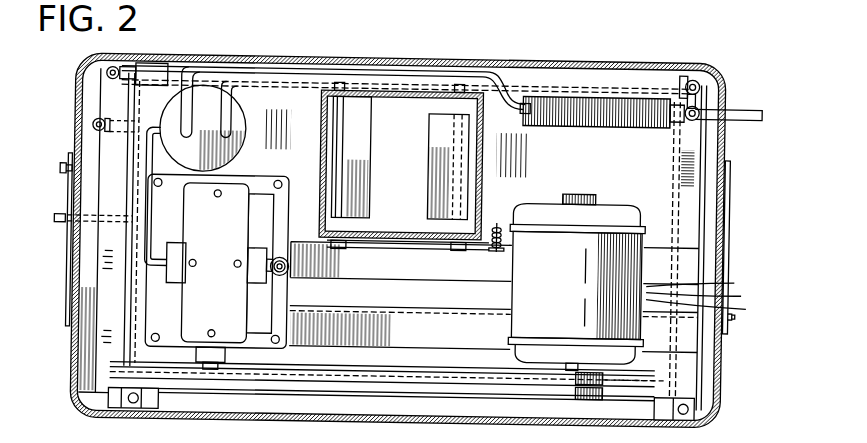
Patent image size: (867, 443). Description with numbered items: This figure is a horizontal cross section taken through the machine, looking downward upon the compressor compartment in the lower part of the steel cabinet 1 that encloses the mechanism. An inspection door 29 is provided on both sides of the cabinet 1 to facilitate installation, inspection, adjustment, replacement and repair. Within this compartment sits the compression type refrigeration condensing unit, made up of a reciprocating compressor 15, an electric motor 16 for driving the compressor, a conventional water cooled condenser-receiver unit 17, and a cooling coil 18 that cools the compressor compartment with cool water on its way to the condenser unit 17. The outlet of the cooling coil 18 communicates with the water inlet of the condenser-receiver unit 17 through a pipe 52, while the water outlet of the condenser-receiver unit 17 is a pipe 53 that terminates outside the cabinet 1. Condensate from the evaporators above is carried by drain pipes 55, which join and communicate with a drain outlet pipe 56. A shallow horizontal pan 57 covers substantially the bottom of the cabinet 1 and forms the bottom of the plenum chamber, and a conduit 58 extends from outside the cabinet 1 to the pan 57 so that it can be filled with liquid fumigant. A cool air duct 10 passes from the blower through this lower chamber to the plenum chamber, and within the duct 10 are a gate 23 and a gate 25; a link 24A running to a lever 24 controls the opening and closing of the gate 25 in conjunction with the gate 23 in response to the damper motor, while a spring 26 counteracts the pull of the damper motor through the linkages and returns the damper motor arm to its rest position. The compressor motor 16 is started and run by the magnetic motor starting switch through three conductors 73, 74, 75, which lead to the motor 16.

The steel cabinet 1 is at (506, 56).
The cool air duct 10 is at (484, 181).
The reciprocating compressor 15 is at (220, 229).
The electric motor 16 is at (577, 282).
The water cooled condenser-receiver unit 17 is at (233, 148).
The cooling coil 18 is at (562, 118).
The gate 23 is at (430, 173).
The lever 24 is at (494, 297).
The link 24A is at (407, 259).
The gate 25 is at (368, 124).
The spring 26 is at (497, 243).
The inspection door 29 is at (76, 278).
The pipe 52 is at (233, 106).
The pipe 53 is at (193, 66).
The drain pipes 55 is at (108, 74).
The drain outlet pipe 56 is at (765, 89).
The shallow horizontal pan 57 is at (624, 379).
The conduit 58 is at (57, 215).
The conductor 73 is at (707, 311).
The conductor 74 is at (705, 297).
The conductor 75 is at (701, 284).